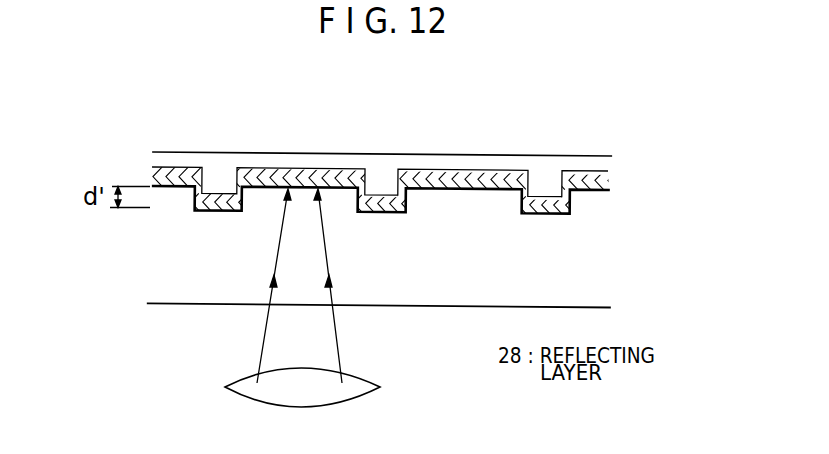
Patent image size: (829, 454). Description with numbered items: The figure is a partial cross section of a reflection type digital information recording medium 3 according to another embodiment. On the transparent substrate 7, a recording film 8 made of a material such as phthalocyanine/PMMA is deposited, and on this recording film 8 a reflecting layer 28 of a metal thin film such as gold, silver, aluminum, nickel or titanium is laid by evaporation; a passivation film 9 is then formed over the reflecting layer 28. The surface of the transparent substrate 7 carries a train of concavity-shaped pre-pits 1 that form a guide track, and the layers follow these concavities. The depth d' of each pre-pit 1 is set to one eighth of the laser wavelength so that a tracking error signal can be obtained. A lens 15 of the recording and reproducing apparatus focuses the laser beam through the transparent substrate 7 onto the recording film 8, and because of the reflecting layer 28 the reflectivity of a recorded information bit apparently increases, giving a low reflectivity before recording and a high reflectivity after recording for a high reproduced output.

The pre-pit 1 is at (219, 186).
The optical recording medium 3 is at (102, 153).
The transparent substrate 7 is at (592, 249).
The recording film 8 is at (612, 188).
The passivation film 9 is at (608, 168).
The lens 15 is at (362, 373).
The reflecting layer 28 is at (612, 177).